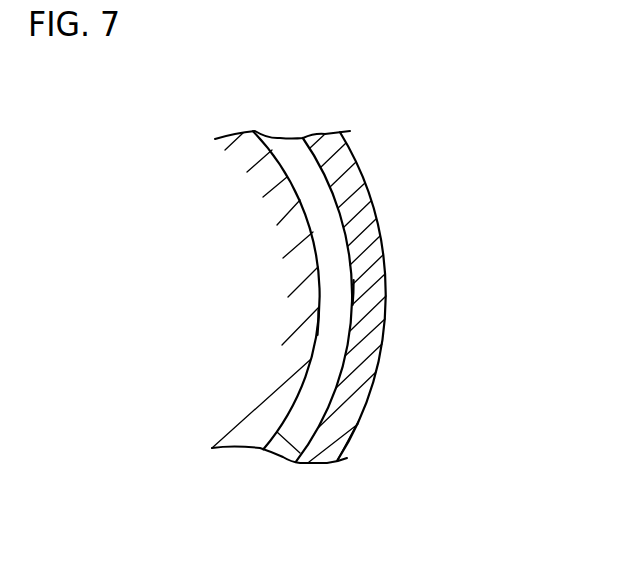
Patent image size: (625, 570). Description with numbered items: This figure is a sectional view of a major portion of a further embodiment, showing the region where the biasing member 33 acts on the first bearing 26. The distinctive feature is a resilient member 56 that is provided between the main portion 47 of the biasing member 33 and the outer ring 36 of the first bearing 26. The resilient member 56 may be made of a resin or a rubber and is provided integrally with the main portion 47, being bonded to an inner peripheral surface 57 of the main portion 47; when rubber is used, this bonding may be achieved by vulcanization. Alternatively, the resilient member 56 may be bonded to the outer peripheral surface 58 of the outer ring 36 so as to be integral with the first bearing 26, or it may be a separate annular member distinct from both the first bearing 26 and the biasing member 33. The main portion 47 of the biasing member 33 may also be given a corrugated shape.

The first bearing 26 is at (300, 397).
The biasing member 33 is at (398, 297).
The outer ring 36 is at (281, 161).
The main portion 47 is at (376, 210).
The resilient member 56 is at (347, 256).
The inner peripheral surface 57 is at (356, 285).
The outer peripheral surface 58 is at (318, 321).